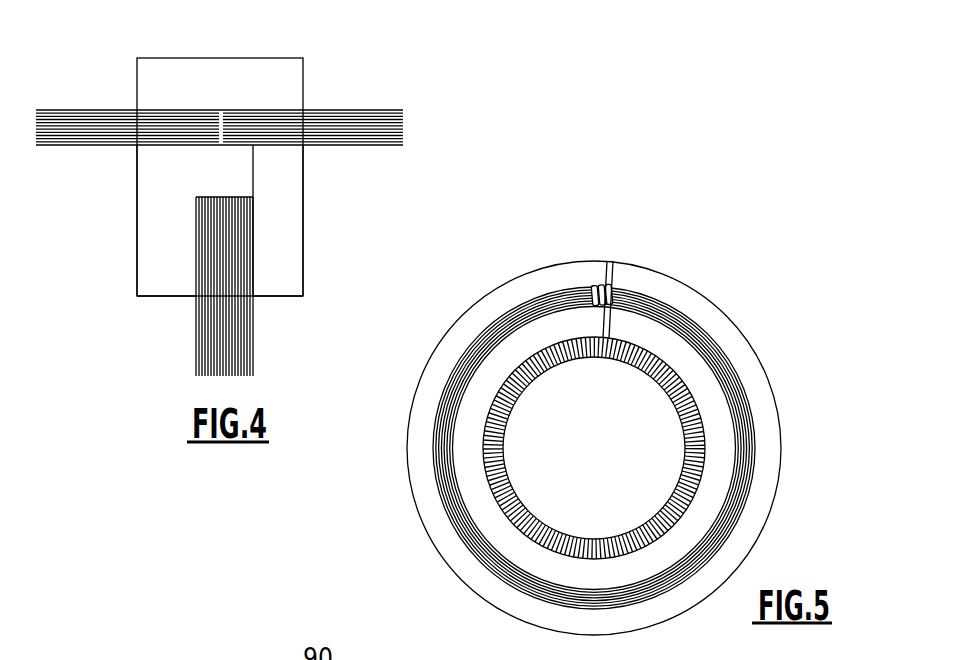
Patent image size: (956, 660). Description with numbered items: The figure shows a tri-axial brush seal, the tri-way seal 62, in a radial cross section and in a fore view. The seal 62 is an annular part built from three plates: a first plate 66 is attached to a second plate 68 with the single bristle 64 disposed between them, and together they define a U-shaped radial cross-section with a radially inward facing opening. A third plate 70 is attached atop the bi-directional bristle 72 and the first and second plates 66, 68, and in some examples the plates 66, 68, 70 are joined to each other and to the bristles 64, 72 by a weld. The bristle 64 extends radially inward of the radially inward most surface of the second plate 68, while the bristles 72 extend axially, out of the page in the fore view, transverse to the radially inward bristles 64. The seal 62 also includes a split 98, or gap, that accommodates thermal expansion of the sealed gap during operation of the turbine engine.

In FIG. 4, the tri-way seal 62 is at (427, 77).
In FIG. 5, the tri-way seal 62 is at (767, 278).
In FIG. 4, the single bristle 64 is at (218, 328).
In FIG. 5, the single bristle 64 is at (691, 428).
In FIG. 4, the first plate 66 is at (160, 232).
In FIG. 4, the second plate 68 is at (290, 228).
In FIG. 5, the second plate 68 is at (707, 385).
In FIG. 4, the third plate 70 is at (282, 76).
In FIG. 5, the third plate 70 is at (648, 280).
In FIG. 4, the bi-directional bristle 72 is at (330, 128).
In FIG. 5, the bi-directional bristle 72 is at (670, 312).
In FIG. 5, the split 98 is at (612, 234).